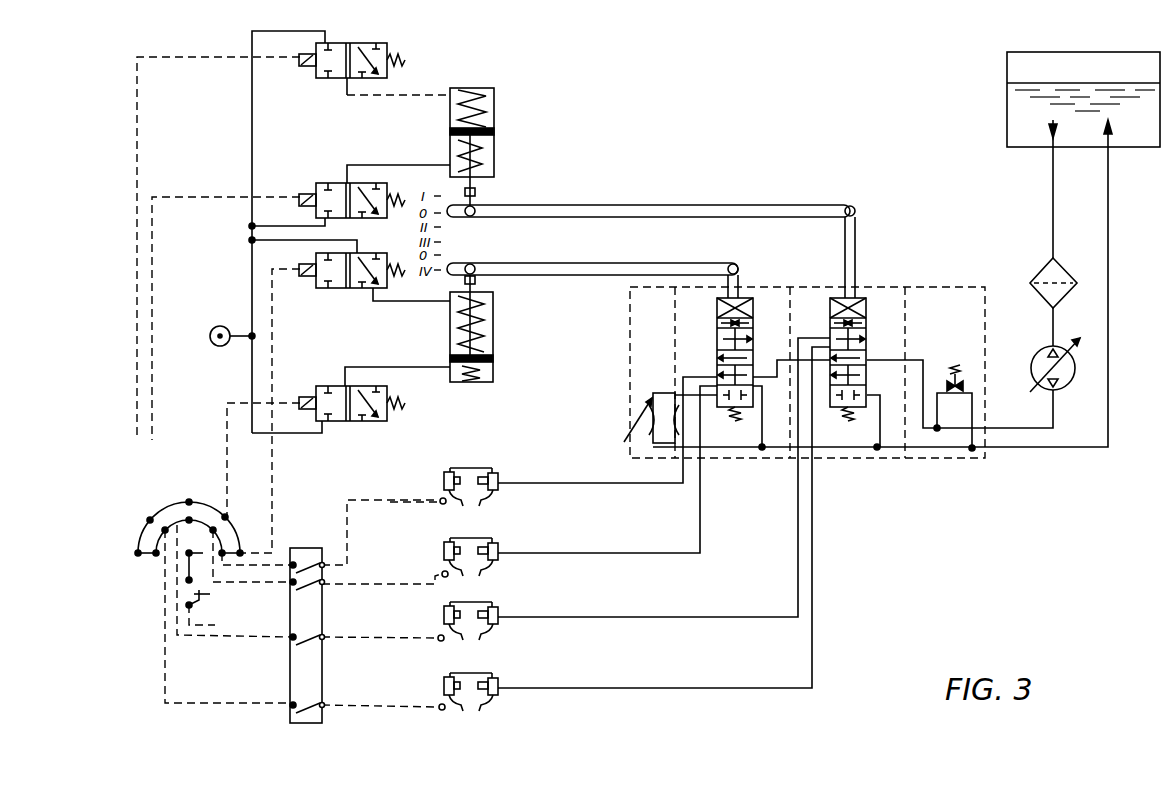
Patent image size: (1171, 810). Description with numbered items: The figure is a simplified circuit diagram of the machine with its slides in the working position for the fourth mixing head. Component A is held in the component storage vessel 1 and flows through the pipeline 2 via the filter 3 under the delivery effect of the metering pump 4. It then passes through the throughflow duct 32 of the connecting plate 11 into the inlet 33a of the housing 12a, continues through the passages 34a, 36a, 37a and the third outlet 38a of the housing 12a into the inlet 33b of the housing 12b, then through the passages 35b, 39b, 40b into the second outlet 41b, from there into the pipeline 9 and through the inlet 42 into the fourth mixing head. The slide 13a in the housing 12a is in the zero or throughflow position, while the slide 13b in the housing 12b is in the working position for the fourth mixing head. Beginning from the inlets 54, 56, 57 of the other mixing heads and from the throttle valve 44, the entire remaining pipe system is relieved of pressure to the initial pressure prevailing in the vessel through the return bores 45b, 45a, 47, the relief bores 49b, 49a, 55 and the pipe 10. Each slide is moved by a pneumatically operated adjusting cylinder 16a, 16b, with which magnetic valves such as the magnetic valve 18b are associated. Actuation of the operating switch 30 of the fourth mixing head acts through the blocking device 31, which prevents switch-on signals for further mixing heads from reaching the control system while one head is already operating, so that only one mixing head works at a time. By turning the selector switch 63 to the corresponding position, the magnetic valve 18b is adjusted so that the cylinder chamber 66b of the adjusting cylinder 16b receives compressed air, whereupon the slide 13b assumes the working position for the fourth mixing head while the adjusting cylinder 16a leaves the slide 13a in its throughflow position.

The component storage vessel 1 is at (1130, 147).
The pipeline 2 is at (1052, 233).
The filter 3 is at (1042, 276).
The metering pump 4 is at (1041, 356).
The pipeline 9 is at (607, 447).
The pipe 10 is at (1110, 233).
The connecting plate 11 is at (963, 296).
The housing 12a is at (878, 292).
The housing 12b is at (770, 292).
The slide 13a is at (857, 237).
The slide 13b is at (740, 290).
The adjusting cylinder 16a is at (498, 122).
The adjusting cylinder 16b is at (498, 327).
The magnetic valve 18b is at (331, 283).
The operating switch 30 is at (441, 498).
The blocking device 31 is at (322, 672).
The throughflow duct 32 is at (950, 432).
The inlet 33a is at (898, 358).
The inlet 33b is at (756, 362).
The passage 34a is at (904, 395).
The passage 36a is at (904, 395).
The passage 37a is at (904, 395).
The passage 35b is at (750, 407).
The passage 39b is at (750, 407).
The passage 40b is at (750, 407).
The third outlet 38a is at (800, 345).
The second outlet 41b is at (687, 376).
The inlet 42 is at (499, 487).
The throttle valve 44 is at (622, 438).
The return bore 45a is at (850, 420).
The return bore 45b is at (737, 420).
The return bore 47 is at (882, 312).
The relief bore 55 is at (975, 452).
The relief bore 49a is at (884, 432).
The relief bore 49b is at (765, 435).
The inlet 54 is at (499, 557).
The inlet 56 is at (499, 692).
The inlet 57 is at (499, 621).
The selector switch 63 is at (189, 558).
The cylinder chamber 66b is at (470, 328).